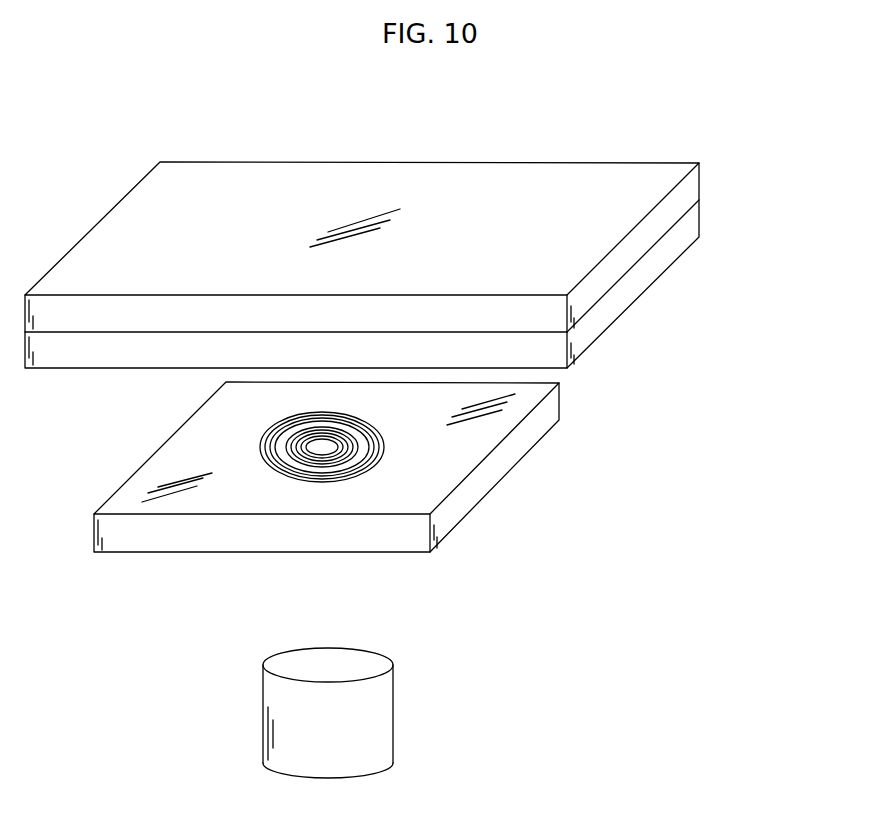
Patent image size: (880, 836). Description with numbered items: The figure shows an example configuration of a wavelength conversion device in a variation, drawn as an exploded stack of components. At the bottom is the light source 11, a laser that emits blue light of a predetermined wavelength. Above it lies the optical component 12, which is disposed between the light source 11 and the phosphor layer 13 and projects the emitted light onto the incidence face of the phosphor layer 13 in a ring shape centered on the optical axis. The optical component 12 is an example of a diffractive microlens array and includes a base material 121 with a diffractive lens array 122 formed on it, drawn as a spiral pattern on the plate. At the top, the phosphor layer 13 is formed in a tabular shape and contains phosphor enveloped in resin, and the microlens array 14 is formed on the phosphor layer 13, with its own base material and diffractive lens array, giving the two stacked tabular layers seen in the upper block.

The light source 11 is at (372, 697).
The optical component 12 is at (383, 467).
The base material 121 is at (457, 513).
The diffractive lens array 122 is at (385, 439).
The phosphor layer 13 is at (607, 305).
The microlens array 14 is at (688, 185).